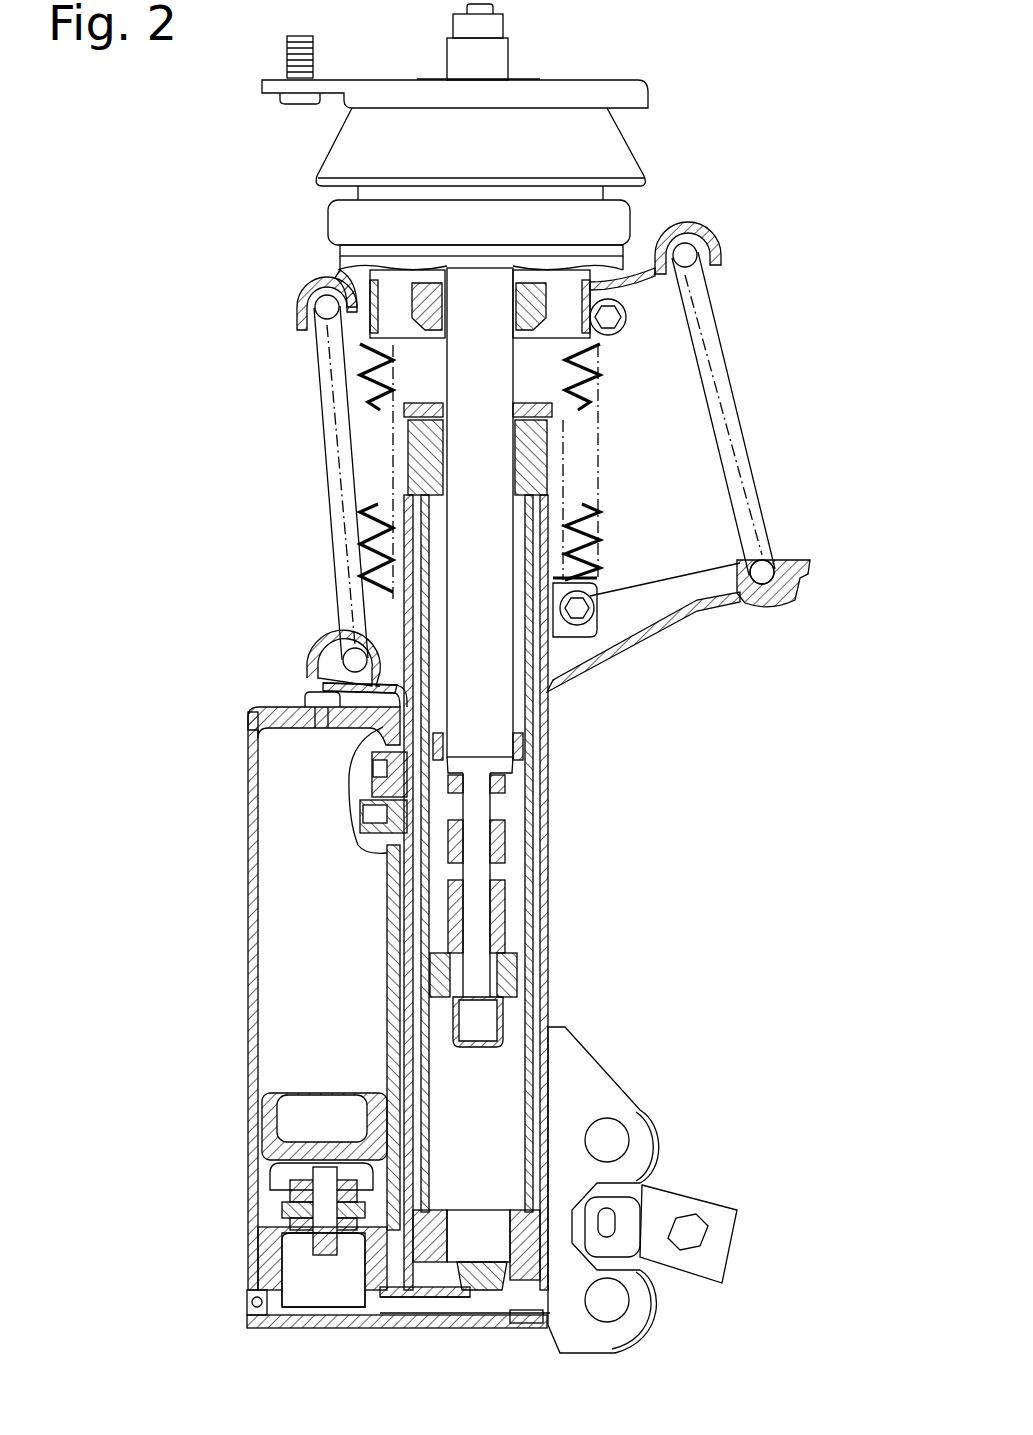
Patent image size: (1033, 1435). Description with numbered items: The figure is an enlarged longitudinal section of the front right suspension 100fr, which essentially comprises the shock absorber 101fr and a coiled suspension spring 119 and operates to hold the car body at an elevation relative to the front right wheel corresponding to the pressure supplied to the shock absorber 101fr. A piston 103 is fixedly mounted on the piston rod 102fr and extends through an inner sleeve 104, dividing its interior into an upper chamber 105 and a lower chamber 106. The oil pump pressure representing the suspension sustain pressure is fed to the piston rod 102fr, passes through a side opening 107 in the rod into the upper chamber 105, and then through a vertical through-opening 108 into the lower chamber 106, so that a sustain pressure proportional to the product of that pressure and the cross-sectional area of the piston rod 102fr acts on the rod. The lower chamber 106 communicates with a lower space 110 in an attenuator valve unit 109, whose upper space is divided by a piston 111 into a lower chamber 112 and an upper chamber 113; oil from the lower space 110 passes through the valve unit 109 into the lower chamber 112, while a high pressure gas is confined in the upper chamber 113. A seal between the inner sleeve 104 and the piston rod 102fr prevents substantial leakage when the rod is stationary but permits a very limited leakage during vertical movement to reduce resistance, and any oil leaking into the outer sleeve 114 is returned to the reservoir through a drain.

The suspension 100fr is at (862, 195).
The shock absorber 101fr is at (558, 887).
The piston rod 102fr is at (362, 381).
The piston 103 is at (520, 945).
The inner sleeve 104 is at (527, 912).
The upper chamber 105 is at (518, 845).
The lower chamber 106 is at (505, 1110).
The side opening 107 is at (500, 812).
The vertical through-opening 108 is at (525, 980).
The attenuator valve unit 109 is at (303, 1237).
The lower space 110 is at (343, 1290).
The piston 111 is at (298, 1108).
The lower chamber 112 is at (292, 1192).
The upper chamber 113 is at (280, 1022).
The outer sleeve 114 is at (560, 665).
The coiled suspension spring 119 is at (722, 330).